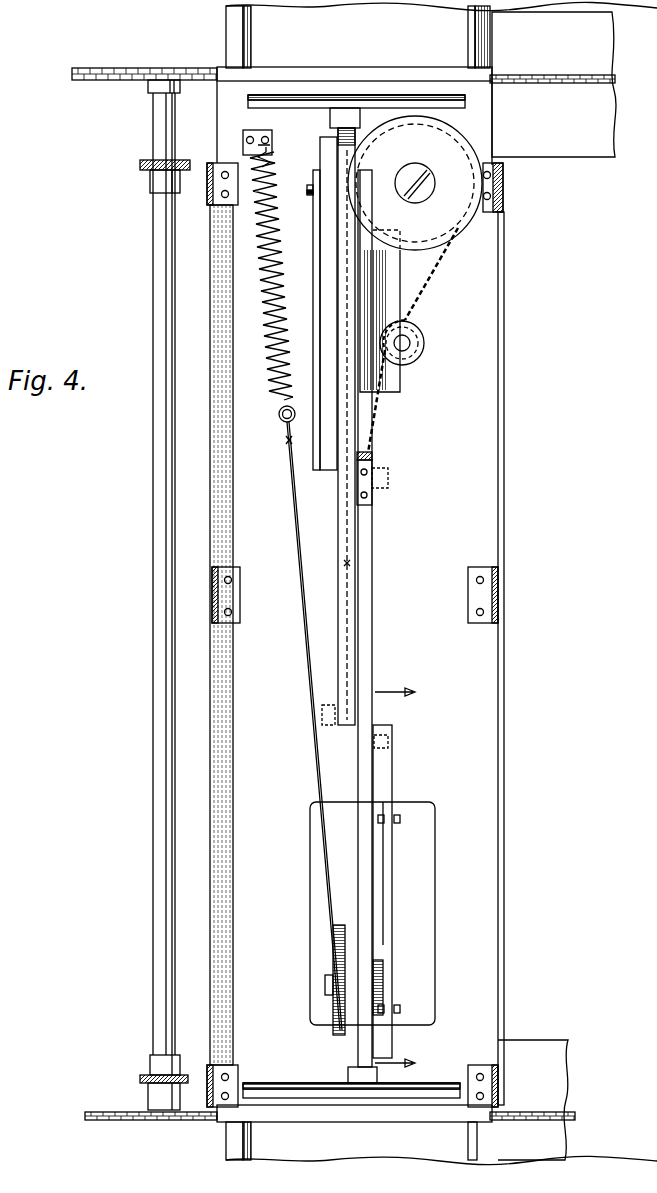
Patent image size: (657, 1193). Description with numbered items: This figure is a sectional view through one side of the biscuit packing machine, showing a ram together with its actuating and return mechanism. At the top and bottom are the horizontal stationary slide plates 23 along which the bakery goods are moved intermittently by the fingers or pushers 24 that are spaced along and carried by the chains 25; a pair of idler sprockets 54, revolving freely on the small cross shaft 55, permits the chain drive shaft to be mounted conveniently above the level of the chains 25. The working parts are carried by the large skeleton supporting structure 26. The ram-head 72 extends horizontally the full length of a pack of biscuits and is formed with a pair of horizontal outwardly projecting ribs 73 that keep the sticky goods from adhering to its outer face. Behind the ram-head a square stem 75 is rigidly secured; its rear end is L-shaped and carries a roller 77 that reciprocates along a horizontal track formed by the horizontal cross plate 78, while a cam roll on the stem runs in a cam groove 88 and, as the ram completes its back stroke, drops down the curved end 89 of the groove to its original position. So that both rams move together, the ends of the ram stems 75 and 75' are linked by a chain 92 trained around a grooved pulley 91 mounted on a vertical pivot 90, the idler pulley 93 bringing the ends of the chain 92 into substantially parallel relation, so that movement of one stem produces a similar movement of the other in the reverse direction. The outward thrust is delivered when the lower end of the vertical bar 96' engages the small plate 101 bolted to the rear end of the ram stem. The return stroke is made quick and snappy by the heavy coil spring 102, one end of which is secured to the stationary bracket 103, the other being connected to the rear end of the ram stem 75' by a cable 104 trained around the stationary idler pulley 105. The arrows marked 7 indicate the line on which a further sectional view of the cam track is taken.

The section line 7 is at (403, 879).
The slide plate 23 is at (568, 145).
The pusher 24 is at (250, 30).
The chain 25 is at (90, 70).
The skeleton structure 26 is at (500, 600).
The idler sprocket 54 is at (160, 72).
The cross shaft 55 is at (153, 995).
The ram-head 72 is at (416, 103).
The rib 73 is at (375, 95).
The stem 75 is at (372, 597).
The ram stem 75' is at (377, 435).
The roller 77 is at (388, 476).
The cross plate 78 is at (483, 698).
The cam groove 88 is at (320, 147).
The curved end 89 is at (327, 463).
The vertical pivot 90 is at (417, 178).
The grooved pulley 91 is at (440, 225).
The chain 92 is at (425, 283).
The idler pulley 93 is at (410, 346).
The stop 96' is at (388, 456).
The plate 101 is at (372, 504).
The coil spring 102 is at (263, 330).
The bracket 103 is at (243, 148).
The cable 104 is at (308, 676).
The idler pulley 105 is at (332, 1036).